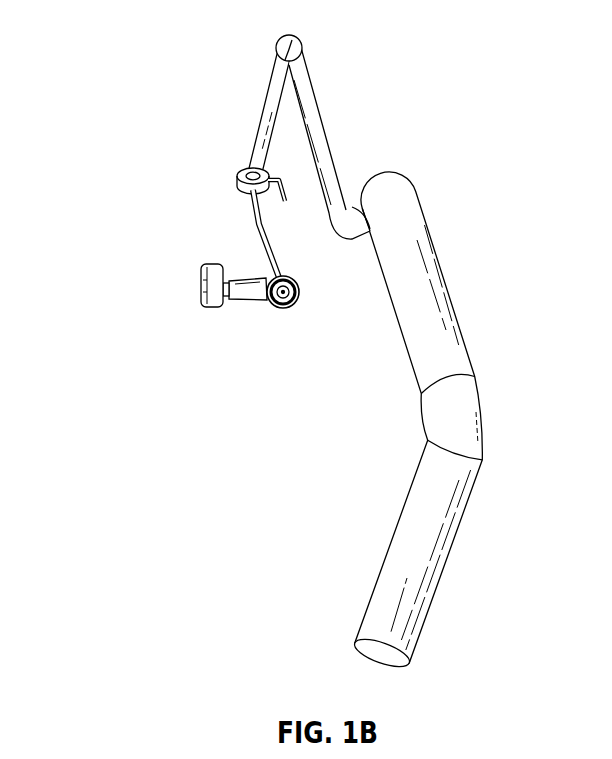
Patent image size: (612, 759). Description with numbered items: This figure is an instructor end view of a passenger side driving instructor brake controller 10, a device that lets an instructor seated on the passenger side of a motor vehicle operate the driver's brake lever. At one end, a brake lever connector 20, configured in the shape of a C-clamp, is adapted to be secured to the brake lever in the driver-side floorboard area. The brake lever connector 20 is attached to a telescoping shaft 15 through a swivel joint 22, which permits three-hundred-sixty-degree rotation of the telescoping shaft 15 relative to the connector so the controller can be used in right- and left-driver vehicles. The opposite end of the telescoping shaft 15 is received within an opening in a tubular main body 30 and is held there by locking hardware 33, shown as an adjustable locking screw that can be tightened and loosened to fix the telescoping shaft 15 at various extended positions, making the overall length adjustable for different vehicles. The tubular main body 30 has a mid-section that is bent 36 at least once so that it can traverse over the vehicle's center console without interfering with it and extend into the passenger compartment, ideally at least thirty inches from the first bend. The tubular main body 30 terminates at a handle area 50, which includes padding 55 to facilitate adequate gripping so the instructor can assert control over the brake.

The passenger side driving instructor brake controller 10 is at (528, 102).
The telescoping shaft 15 is at (256, 221).
The brake lever connector 20 is at (241, 295).
The swivel joint 22 is at (282, 303).
The tubular main body 30 is at (291, 128).
The locking hardware 33 is at (241, 172).
The bend 36 is at (310, 45).
The handle area 50 is at (450, 422).
The padding 55 is at (420, 400).